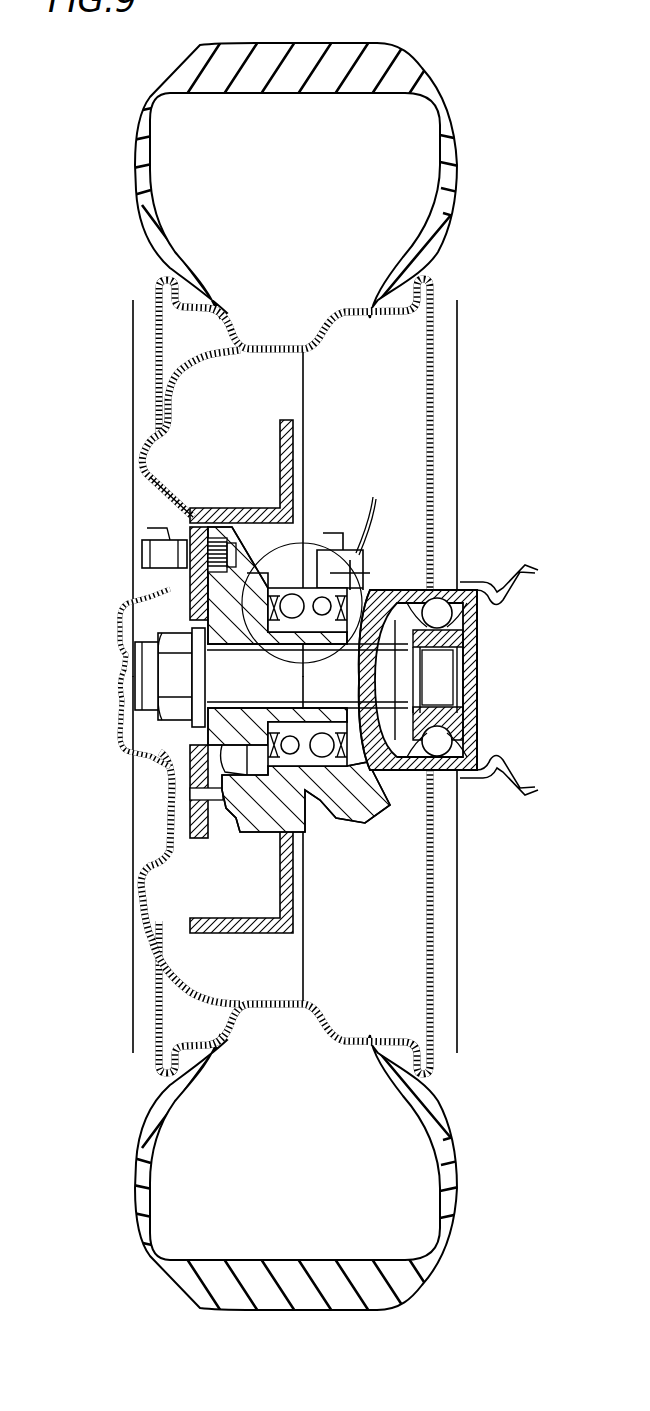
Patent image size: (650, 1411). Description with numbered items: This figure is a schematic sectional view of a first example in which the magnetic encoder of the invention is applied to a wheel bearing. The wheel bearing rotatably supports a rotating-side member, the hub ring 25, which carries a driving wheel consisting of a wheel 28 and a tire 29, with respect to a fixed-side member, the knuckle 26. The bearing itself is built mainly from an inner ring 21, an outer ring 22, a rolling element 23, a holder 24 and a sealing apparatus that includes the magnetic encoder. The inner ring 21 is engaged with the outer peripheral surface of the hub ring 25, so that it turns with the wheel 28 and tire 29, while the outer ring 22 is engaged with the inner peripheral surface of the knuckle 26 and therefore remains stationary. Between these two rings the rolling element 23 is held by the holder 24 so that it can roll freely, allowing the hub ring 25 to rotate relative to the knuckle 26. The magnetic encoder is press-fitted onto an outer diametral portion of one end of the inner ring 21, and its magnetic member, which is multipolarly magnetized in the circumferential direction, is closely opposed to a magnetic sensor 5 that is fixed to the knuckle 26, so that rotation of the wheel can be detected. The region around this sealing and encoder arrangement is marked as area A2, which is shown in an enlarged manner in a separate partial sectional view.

The tire 29 is at (137, 172).
The wheel 28 is at (171, 382).
The area A2 is at (166, 497).
The holder 24 is at (173, 524).
The rolling element 23 is at (150, 598).
The outer ring 22 is at (303, 585).
The knuckle 26 is at (367, 545).
The magnetic sensor 5 is at (335, 549).
The inner ring 21 is at (463, 642).
The hub ring 25 is at (225, 652).